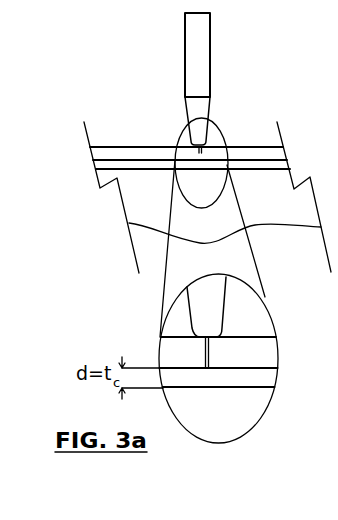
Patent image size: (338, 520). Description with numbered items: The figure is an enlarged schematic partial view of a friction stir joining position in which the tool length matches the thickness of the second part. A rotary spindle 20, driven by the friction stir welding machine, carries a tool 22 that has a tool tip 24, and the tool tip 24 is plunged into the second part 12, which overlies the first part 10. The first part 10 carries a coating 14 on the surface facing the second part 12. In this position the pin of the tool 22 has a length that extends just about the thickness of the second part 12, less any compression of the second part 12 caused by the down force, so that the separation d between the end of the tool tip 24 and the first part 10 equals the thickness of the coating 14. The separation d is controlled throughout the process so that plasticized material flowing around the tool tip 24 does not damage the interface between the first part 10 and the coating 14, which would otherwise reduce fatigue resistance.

The first part 10 is at (141, 211).
The second part 12 is at (101, 152).
The coating 14 is at (98, 162).
The rotary spindle 20 is at (202, 82).
The tool 22 is at (193, 108).
The tool tip 24 is at (201, 150).